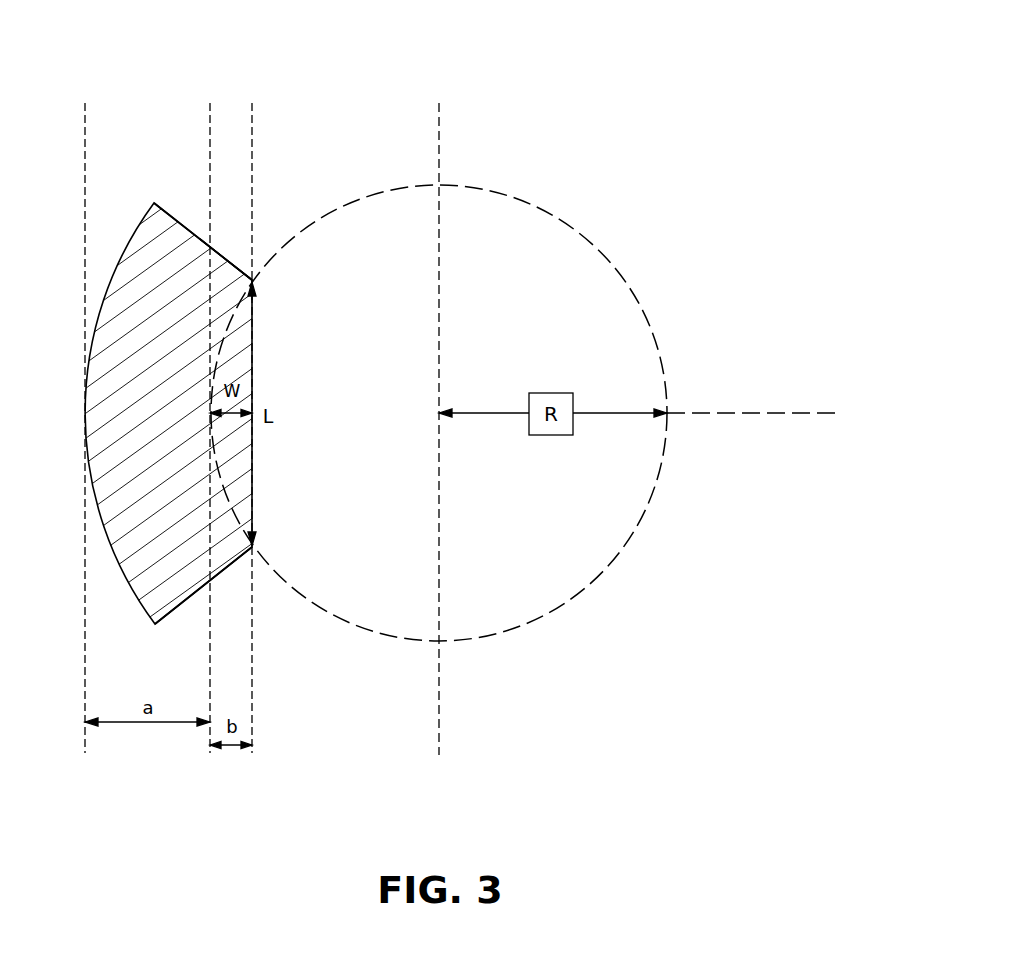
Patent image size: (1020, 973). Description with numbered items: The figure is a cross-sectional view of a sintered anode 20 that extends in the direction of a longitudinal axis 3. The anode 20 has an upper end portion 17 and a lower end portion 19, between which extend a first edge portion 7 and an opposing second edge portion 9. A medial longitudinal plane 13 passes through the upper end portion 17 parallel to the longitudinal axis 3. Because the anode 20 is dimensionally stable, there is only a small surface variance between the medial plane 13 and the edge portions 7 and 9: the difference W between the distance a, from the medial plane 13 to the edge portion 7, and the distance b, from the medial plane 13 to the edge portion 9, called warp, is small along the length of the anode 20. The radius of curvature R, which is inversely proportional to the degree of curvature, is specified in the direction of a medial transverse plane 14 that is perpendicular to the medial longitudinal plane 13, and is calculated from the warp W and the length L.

The longitudinal axis 3 is at (439, 415).
The first edge portion 7 is at (106, 534).
The second edge portion 9 is at (229, 512).
The medial longitudinal plane 13 is at (210, 120).
The medial transverse plane 14 is at (766, 414).
The upper end portion 17 is at (223, 255).
The lower end portion 19 is at (182, 605).
The anode 20 is at (153, 203).